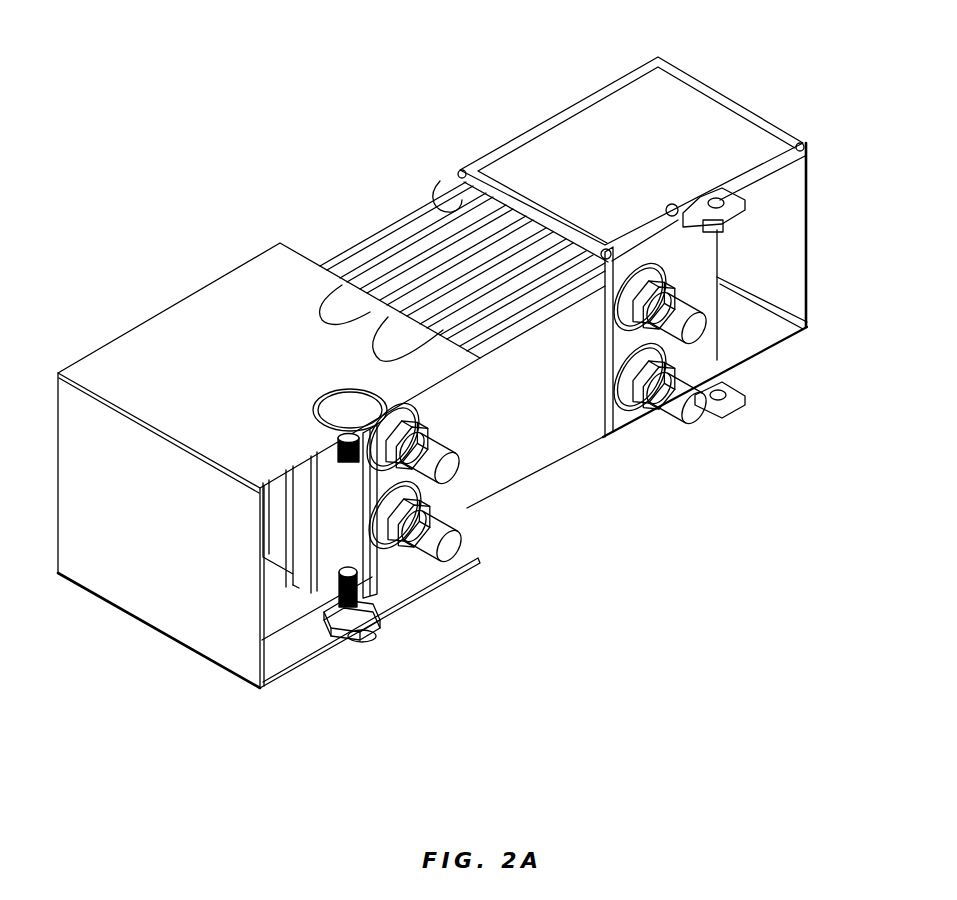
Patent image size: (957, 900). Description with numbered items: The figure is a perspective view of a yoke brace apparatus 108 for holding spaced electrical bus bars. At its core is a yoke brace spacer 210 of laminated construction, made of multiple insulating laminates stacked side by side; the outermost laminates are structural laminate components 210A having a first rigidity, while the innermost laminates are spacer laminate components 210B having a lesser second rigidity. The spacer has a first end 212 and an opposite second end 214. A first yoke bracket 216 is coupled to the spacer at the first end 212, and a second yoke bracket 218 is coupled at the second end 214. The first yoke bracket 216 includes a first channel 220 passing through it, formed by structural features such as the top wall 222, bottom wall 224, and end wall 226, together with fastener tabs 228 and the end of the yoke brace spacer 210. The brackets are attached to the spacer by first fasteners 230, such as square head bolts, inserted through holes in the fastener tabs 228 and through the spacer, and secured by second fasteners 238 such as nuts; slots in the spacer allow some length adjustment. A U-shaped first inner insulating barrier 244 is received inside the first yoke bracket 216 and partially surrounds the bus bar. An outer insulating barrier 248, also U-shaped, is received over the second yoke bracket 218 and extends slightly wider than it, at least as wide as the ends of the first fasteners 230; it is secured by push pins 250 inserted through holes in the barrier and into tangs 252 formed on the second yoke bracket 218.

The yoke brace apparatus 108 is at (290, 158).
The yoke brace spacer 210 is at (537, 490).
The structural laminate components 210A is at (403, 213).
The spacer laminate components 210B is at (390, 322).
The first end 212 is at (738, 348).
The second end 214 is at (292, 600).
The first yoke bracket 216 is at (570, 88).
The second yoke bracket 218 is at (408, 568).
The first channel 220 is at (772, 266).
The top wall 222 is at (688, 127).
The bottom wall 224 is at (787, 343).
The end wall 226 is at (808, 180).
The fastener tabs 228 is at (600, 368).
The first fasteners 230 is at (694, 334).
The second fasteners 238 is at (638, 262).
The first inner insulating barrier 244 is at (437, 200).
The outer insulating barrier 248 is at (143, 303).
The push pins 250 is at (318, 409).
The tangs 252 is at (340, 438).